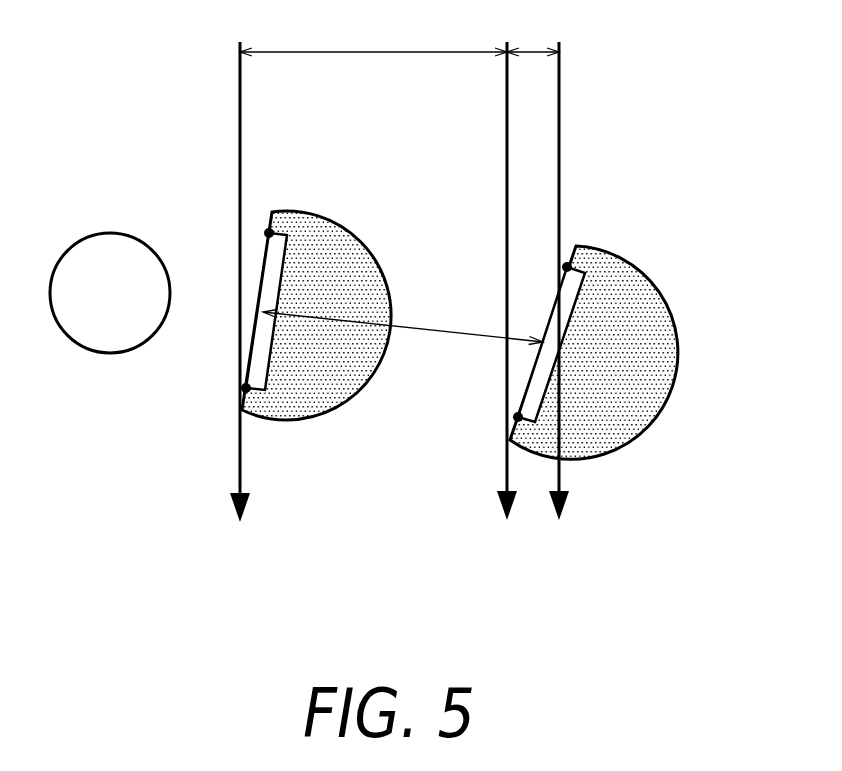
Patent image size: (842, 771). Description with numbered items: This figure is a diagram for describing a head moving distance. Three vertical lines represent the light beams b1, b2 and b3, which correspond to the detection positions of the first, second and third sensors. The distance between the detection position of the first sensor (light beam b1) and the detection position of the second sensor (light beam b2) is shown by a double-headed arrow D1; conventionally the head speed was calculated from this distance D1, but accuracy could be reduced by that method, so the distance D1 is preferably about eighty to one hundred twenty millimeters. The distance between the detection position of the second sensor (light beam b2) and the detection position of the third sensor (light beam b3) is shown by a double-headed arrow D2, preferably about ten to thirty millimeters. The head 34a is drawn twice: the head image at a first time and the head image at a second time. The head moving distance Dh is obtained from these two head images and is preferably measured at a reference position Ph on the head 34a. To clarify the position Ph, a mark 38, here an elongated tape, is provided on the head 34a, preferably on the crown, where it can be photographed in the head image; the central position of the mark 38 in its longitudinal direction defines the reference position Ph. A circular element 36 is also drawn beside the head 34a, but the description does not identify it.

The head 34a is at (330, 395).
The mark 38 is at (277, 263).
The roller 36 is at (110, 333).
The head moving distance Dh is at (403, 322).
The reference position Ph is at (262, 312).
The distance D1 is at (373, 39).
The distance D2 is at (533, 39).
The light beam b1 is at (240, 121).
The light beam b2 is at (507, 119).
The light beam b3 is at (559, 117).